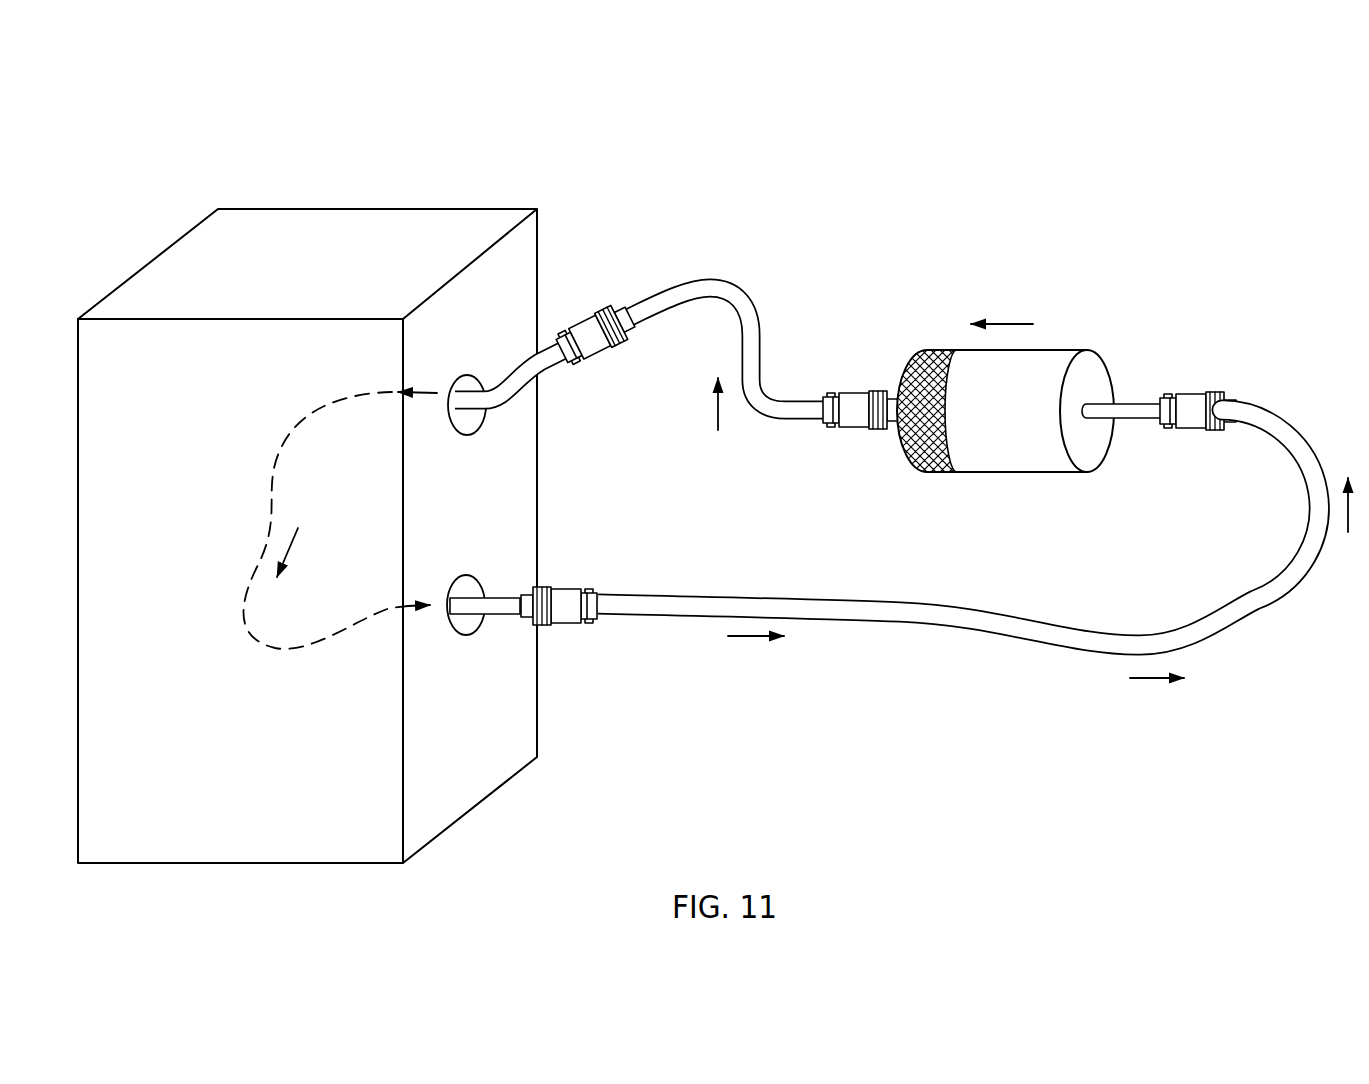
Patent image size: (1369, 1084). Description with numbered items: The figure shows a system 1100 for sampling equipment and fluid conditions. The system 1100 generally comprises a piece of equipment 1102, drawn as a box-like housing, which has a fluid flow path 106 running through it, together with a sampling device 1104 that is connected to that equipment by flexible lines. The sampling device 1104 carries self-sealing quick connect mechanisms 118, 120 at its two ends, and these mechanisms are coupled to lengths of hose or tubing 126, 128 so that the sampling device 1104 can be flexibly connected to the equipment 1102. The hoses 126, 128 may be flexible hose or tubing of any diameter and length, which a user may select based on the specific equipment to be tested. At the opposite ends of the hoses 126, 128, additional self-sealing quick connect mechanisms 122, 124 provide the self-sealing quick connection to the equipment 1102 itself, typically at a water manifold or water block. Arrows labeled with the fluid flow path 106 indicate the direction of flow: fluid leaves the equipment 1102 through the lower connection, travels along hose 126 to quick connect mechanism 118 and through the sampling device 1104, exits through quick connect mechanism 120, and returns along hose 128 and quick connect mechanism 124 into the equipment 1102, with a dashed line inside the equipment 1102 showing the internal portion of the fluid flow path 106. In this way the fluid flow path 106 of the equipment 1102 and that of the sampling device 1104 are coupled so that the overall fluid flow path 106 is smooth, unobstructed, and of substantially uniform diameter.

The system for sampling fluid conditions 1100 is at (190, 181).
The piece of equipment 1102 is at (272, 754).
The sampling device 1104 is at (1088, 328).
The fluid flow path 106 is at (804, 500).
The self-sealing quick connect mechanism 118 is at (1197, 432).
The self-sealing quick connect mechanism 120 is at (855, 390).
The self-sealing quick connect mechanism 122 is at (558, 625).
The self-sealing quick connect mechanism 124 is at (607, 353).
The hose 126 is at (883, 622).
The hose 128 is at (688, 278).